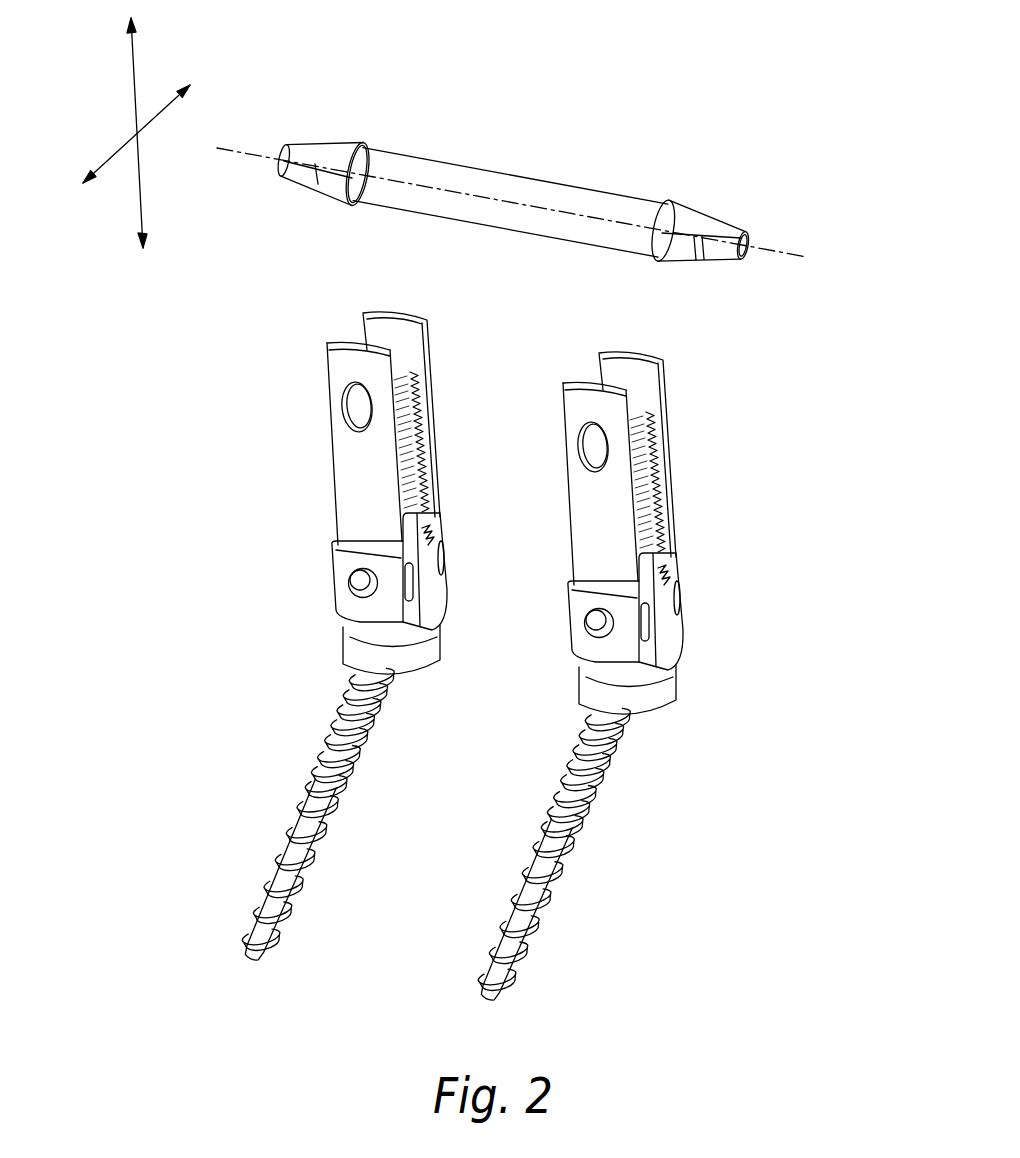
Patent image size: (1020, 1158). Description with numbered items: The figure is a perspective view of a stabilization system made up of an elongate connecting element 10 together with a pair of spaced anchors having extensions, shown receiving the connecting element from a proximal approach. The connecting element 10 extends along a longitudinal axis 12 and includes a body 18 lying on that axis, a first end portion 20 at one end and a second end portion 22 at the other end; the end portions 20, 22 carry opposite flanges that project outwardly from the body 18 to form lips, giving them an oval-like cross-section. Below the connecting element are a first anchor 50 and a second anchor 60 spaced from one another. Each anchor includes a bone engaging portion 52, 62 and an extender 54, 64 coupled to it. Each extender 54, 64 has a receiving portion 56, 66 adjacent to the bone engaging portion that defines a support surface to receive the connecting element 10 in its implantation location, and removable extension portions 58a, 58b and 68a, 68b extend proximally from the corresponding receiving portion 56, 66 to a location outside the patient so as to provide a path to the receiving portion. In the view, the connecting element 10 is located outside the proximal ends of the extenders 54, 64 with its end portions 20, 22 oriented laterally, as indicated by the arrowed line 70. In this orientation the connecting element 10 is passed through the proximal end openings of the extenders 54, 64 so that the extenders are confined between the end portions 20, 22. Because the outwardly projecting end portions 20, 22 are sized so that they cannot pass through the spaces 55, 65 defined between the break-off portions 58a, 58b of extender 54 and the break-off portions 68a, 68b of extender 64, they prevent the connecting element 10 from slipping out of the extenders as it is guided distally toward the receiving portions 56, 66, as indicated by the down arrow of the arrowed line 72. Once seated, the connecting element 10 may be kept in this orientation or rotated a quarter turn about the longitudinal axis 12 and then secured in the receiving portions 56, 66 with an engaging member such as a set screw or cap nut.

The connecting element 10 is at (512, 157).
The longitudinal axis 12 is at (781, 250).
The body 18 is at (455, 172).
The first end portion 20 is at (337, 143).
The second end portion 22 is at (683, 210).
The first anchor 50 is at (357, 638).
The bone engaging portion 52 is at (310, 780).
The extender 54 is at (386, 428).
The space 55 is at (403, 383).
The receiving portion 56 is at (353, 655).
The extension portion 58a is at (357, 402).
The extension portion 58b is at (430, 410).
The second anchor 60 is at (621, 678).
The bone engaging portion 62 is at (606, 780).
The extender 64 is at (623, 468).
The space 65 is at (639, 423).
The receiving portion 66 is at (673, 683).
The extension portion 68a is at (586, 553).
The extension portion 68b is at (666, 450).
The arrowed line 70 is at (113, 153).
The arrowed line 72 is at (140, 197).